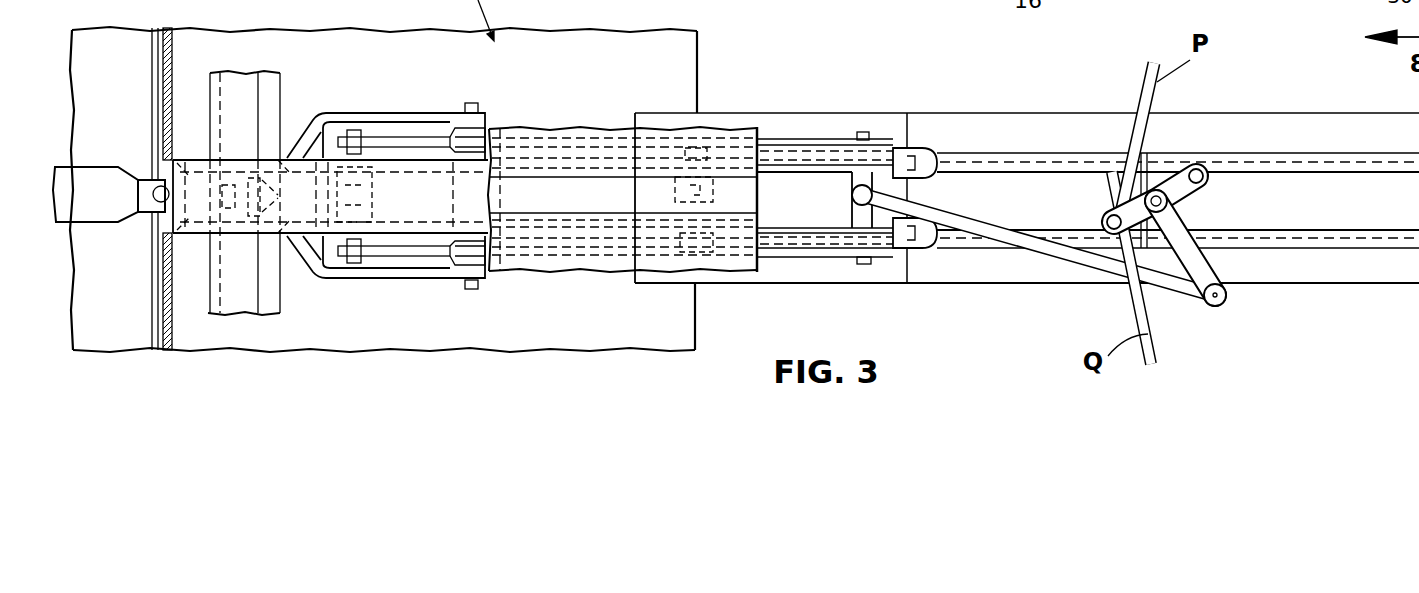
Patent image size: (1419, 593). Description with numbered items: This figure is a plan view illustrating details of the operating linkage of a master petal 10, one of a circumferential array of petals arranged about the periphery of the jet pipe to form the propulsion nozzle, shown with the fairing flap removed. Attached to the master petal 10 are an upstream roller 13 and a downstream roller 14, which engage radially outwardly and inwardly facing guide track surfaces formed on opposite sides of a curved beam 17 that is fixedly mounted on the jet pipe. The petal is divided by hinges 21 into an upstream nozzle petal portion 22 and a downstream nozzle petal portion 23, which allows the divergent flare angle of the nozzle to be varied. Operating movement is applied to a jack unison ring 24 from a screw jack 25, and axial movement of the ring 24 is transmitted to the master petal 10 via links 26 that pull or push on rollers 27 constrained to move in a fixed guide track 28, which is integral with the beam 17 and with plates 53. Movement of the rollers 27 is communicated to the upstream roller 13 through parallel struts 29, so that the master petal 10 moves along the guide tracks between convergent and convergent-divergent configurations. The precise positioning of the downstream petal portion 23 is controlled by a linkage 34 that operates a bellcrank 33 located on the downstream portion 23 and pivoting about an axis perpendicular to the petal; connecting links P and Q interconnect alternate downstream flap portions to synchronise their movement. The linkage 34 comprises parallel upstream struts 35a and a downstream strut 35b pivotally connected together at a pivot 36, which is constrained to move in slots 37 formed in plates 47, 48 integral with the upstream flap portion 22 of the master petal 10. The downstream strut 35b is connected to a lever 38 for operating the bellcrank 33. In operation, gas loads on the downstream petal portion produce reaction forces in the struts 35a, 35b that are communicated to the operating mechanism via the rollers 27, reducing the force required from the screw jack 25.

The master petal 10 is at (1023, 105).
The upstream roller 13 is at (375, 186).
The downstream roller 14 is at (716, 199).
The curved beam 17 is at (535, 186).
The hinges 21 is at (908, 153).
The upstream nozzle petal portion 22 is at (782, 123).
The downstream nozzle petal portion 23 is at (1095, 122).
The jack unison ring 24 is at (245, 313).
The screw jack 25 is at (95, 172).
The links 26 is at (358, 112).
The rollers 27 is at (458, 192).
The fixed guide track 28 is at (237, 163).
The parallel struts 29 is at (392, 136).
The bellcranks 33 is at (1177, 175).
The linkages 34 is at (965, 204).
The upstream struts 35a is at (570, 134).
The downstream strut 35b is at (1067, 263).
The pivot 36 is at (855, 194).
The slots 37 is at (807, 153).
The levers 38 is at (1238, 270).
The plate 47 is at (788, 242).
The plate 48 is at (833, 155).
The plates 53 is at (608, 153).